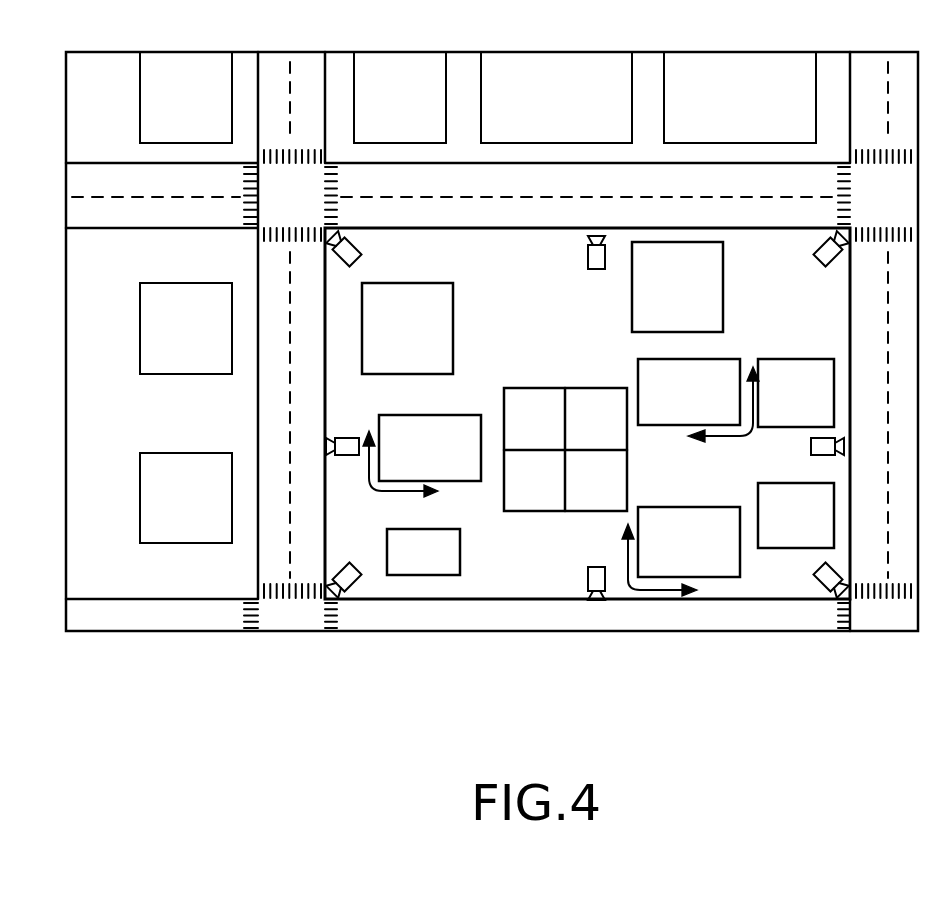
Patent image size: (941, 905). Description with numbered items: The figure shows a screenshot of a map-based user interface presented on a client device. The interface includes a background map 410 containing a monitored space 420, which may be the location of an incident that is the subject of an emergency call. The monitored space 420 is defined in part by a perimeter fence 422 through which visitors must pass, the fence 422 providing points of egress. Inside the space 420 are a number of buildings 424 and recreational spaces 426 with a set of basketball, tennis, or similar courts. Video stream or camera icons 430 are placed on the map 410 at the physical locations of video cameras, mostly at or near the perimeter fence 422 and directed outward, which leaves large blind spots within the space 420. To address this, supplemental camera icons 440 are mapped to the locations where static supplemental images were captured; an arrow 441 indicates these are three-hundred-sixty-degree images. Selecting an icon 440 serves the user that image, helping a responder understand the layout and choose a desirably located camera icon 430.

The map 410 is at (120, 614).
The monitored space 420 is at (311, 618).
The perimeter fence 422 is at (433, 598).
The buildings 424 is at (460, 545).
The recreational spaces 426 is at (538, 512).
The video stream icons 430 is at (352, 457).
The supplemental camera icons 440 is at (467, 415).
The arrow 441 is at (394, 491).